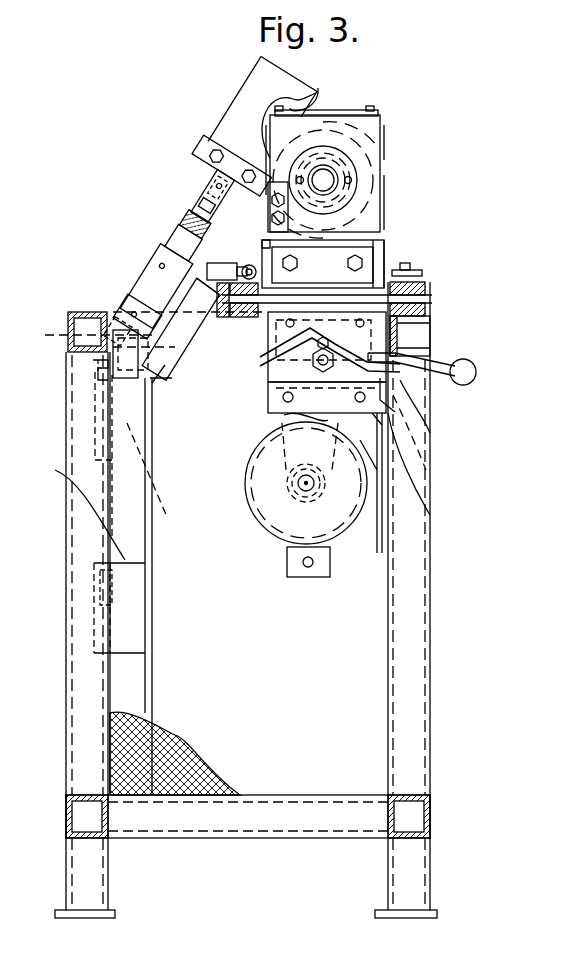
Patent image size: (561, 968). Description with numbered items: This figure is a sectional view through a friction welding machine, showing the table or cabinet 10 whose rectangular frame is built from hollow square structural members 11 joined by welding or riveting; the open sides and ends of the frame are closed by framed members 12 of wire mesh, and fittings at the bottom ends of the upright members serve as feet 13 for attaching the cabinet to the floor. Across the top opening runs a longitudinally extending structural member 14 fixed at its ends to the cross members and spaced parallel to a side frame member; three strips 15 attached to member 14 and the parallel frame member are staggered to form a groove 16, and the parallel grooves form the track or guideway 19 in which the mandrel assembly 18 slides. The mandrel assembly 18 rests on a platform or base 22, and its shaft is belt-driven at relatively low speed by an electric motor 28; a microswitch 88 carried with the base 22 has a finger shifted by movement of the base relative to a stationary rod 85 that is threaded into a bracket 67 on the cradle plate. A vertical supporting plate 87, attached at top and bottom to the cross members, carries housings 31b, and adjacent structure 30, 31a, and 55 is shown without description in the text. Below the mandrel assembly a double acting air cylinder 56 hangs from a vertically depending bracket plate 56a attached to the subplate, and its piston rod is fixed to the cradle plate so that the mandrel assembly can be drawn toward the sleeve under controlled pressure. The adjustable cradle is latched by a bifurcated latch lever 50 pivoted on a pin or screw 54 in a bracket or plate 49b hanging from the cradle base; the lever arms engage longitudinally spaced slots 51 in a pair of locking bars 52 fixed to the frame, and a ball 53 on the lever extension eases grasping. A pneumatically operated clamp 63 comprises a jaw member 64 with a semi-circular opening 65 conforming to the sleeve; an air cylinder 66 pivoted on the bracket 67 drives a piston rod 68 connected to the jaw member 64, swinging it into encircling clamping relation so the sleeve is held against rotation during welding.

The table or cabinet 10 is at (55, 545).
The structural members 11 is at (80, 658).
The framed members of wire mesh 12 is at (168, 735).
The feet 13 is at (115, 905).
The longitudinally extending structural member 14 is at (160, 325).
The longitudinal members or strips 15 is at (425, 295).
The groove 16 is at (370, 268).
The mandrel assembly 18 is at (382, 160).
The track or guideway 19 is at (175, 265).
The platform or base 22 is at (272, 250).
The electric motor 28 is at (240, 520).
The bracket 30 is at (383, 545).
The chute lower portion 31a is at (128, 556).
The housings 31b is at (110, 485).
The bracket or plate 49b is at (290, 375).
The bifurcated latch lever 50 is at (425, 345).
The slots 51 is at (422, 316).
The locking bars 52 is at (165, 396).
The ball 53 is at (450, 382).
The pin or screw 54 is at (165, 378).
The link 55 is at (426, 470).
The air cylinder 56 is at (282, 420).
The vertically depending bracket plate 56a is at (430, 515).
The pneumatically operated clamps 63 is at (225, 122).
The jaw member 64 is at (255, 95).
The semi-circular opening 65 is at (305, 105).
The air cylinder 66 is at (168, 268).
The bracket 67 is at (145, 390).
The piston rod 68 is at (212, 178).
The rod 85 is at (240, 262).
The supporting panel or plate 87 is at (150, 570).
The microswitch 88 is at (195, 227).